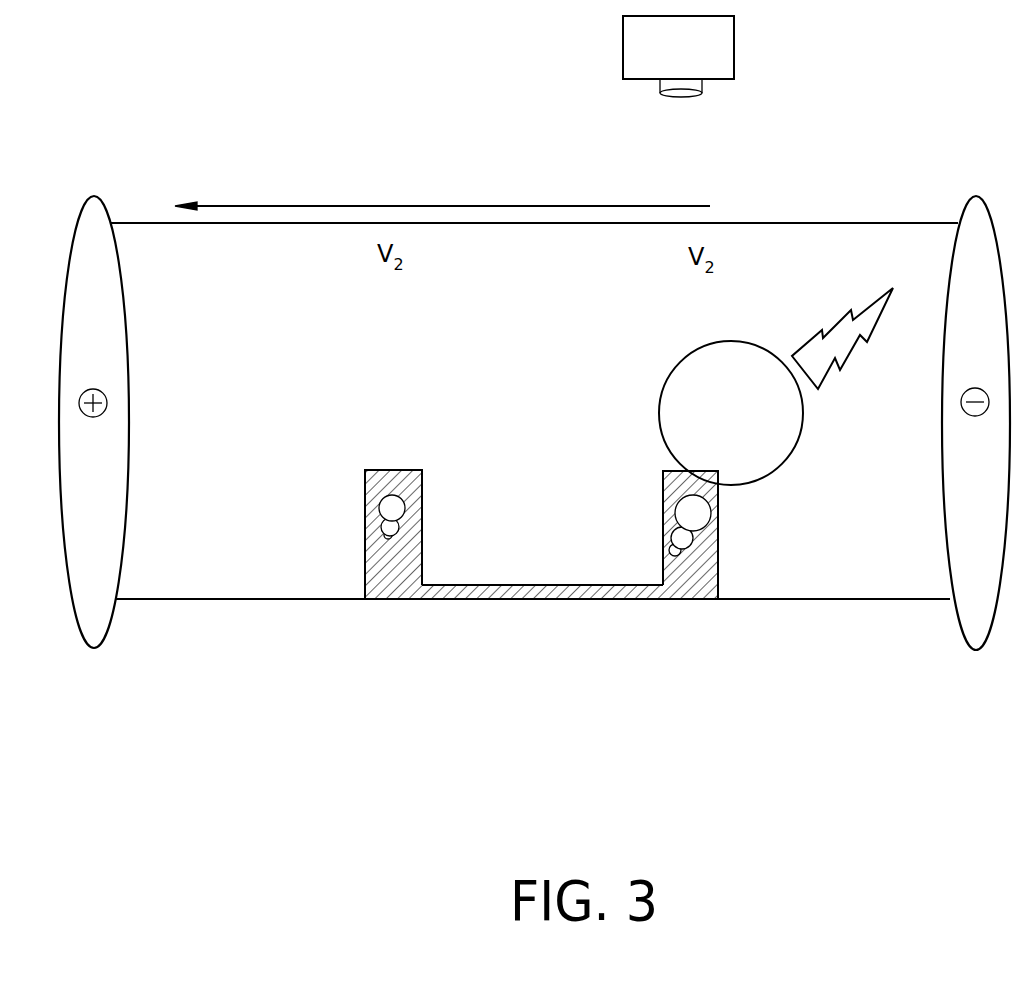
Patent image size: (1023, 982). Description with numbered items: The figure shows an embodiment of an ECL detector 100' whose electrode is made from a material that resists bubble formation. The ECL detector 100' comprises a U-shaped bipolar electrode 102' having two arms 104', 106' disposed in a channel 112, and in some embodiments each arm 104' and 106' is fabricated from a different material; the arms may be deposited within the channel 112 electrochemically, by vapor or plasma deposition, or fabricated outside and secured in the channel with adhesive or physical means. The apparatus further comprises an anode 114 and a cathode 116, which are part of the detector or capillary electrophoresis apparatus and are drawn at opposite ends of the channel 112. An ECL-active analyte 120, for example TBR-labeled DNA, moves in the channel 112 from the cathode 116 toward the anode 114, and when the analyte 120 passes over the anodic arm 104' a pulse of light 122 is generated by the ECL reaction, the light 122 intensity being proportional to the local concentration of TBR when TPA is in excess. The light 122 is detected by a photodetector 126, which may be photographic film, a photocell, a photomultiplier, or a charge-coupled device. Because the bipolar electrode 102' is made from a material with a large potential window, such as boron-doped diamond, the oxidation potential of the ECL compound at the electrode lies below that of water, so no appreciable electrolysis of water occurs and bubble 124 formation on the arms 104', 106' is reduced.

The ECL detector 100' is at (278, 102).
The U-shaped bipolar electrode 102' is at (533, 650).
The anodic arm 104' is at (725, 553).
The arm 106' is at (352, 556).
The channel 112 is at (757, 223).
The anode 114 is at (112, 481).
The cathode 116 is at (996, 481).
The ECL-active analyte 120 is at (753, 427).
The light 122 is at (873, 300).
The bubble 124 is at (387, 512).
The photodetector 126 is at (700, 57).